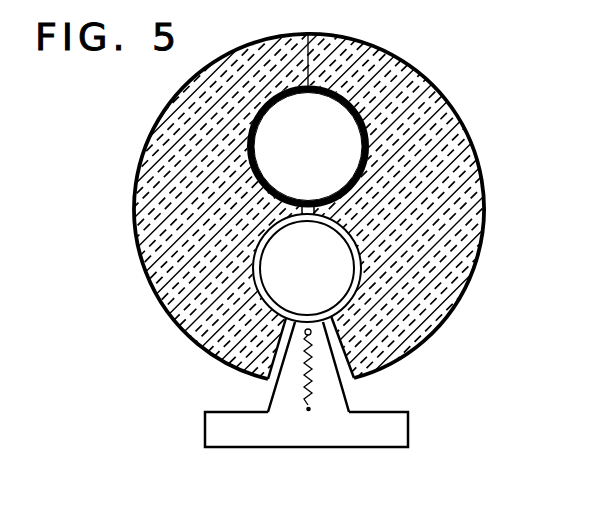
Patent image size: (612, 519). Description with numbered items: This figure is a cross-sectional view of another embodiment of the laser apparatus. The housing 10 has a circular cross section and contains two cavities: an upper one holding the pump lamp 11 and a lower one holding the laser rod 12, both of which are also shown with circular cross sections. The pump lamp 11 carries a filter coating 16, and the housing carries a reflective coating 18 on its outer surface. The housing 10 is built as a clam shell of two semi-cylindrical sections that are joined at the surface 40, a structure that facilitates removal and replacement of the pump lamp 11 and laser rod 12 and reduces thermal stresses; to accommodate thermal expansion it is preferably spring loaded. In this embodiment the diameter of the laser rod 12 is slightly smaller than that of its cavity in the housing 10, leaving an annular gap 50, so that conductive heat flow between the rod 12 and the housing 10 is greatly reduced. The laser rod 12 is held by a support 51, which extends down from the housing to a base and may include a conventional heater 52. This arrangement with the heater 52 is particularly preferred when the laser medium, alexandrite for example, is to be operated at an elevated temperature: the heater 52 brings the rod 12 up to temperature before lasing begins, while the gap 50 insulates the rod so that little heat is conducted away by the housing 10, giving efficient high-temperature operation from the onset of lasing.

The housing 10 is at (306, 207).
The pump lamp 11 is at (308, 147).
The laser rod 12 is at (320, 277).
The filter coating 16 is at (278, 92).
The reflective coating 18 is at (478, 160).
The surface 40 is at (311, 44).
The annular gap 50 is at (246, 276).
The support 51 is at (280, 430).
The heater 52 is at (315, 380).